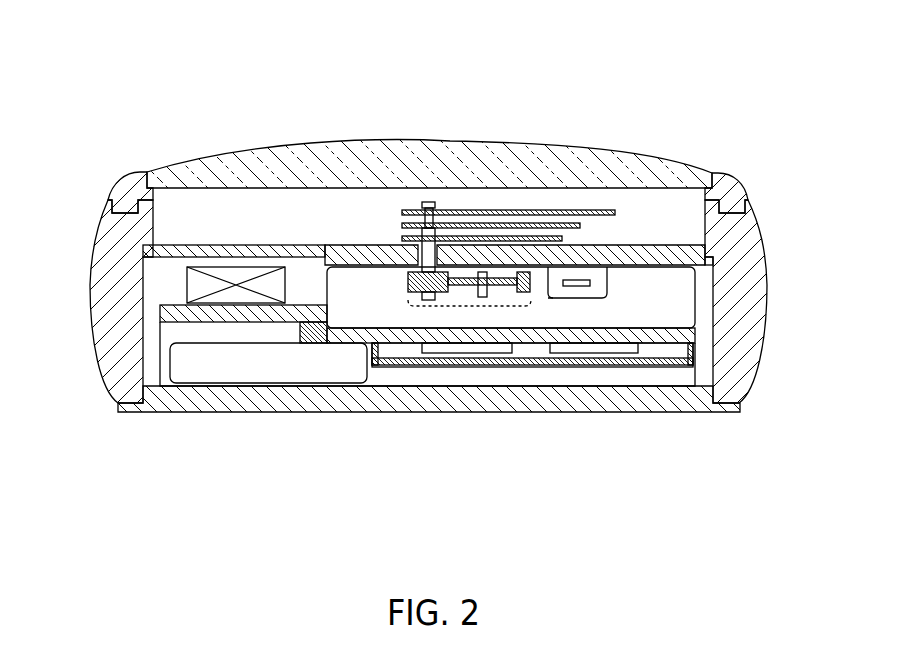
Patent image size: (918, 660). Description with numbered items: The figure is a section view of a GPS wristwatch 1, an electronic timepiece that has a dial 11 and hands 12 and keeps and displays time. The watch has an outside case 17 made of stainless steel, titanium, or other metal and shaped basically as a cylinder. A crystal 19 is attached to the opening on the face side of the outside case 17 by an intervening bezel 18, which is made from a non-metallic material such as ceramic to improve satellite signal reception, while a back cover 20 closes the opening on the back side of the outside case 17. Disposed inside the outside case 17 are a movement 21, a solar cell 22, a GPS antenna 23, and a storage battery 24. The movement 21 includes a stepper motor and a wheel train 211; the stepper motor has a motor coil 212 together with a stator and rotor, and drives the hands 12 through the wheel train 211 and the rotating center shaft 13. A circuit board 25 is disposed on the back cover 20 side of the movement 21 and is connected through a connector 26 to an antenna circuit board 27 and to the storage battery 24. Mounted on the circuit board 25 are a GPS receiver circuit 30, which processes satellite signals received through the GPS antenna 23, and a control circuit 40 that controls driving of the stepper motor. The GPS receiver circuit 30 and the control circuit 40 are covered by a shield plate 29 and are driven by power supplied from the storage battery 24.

The GPS wristwatch 1 is at (663, 72).
The dial 11 is at (212, 245).
The hands 12 is at (509, 203).
The rotating center shaft 13 is at (429, 201).
The outside case 17 is at (106, 208).
The bezel 18 is at (128, 180).
The crystal 19 is at (233, 152).
The back cover 20 is at (196, 401).
The movement 21 is at (697, 318).
The wheel train 211 is at (470, 307).
The motor coil 212 is at (607, 283).
The solar cell 22 is at (348, 245).
The GPS antenna 23 is at (235, 267).
The storage battery 24 is at (250, 372).
The circuit board 25 is at (527, 338).
The connector 26 is at (313, 340).
The antenna circuit board 27 is at (162, 316).
The shield plate 29 is at (403, 366).
The GPS receiver circuit 30 is at (460, 353).
The control circuit 40 is at (596, 353).